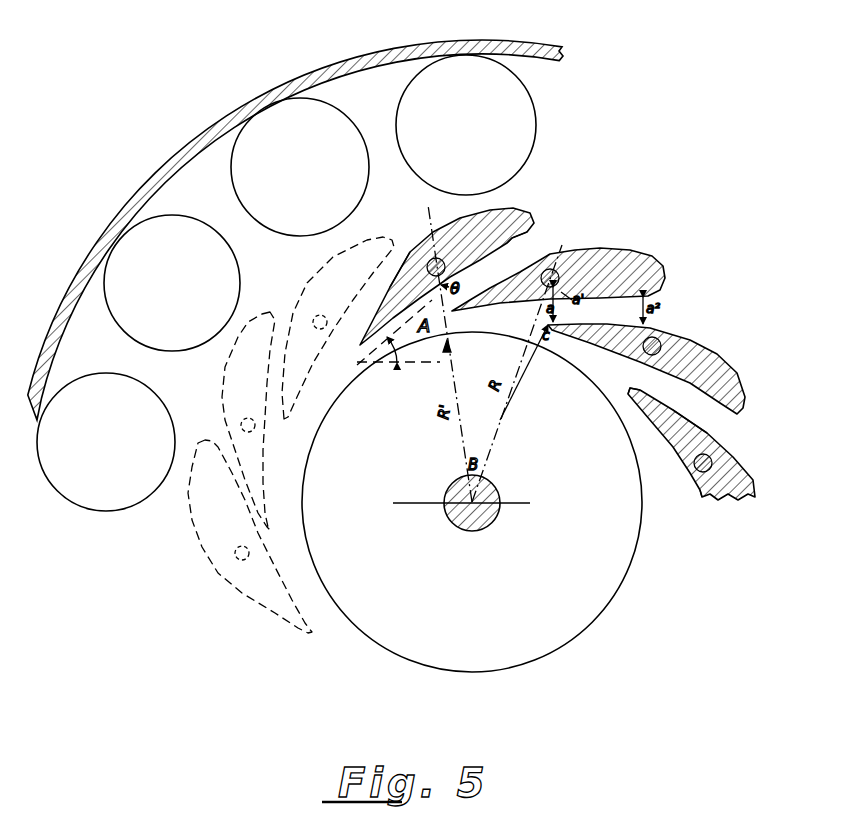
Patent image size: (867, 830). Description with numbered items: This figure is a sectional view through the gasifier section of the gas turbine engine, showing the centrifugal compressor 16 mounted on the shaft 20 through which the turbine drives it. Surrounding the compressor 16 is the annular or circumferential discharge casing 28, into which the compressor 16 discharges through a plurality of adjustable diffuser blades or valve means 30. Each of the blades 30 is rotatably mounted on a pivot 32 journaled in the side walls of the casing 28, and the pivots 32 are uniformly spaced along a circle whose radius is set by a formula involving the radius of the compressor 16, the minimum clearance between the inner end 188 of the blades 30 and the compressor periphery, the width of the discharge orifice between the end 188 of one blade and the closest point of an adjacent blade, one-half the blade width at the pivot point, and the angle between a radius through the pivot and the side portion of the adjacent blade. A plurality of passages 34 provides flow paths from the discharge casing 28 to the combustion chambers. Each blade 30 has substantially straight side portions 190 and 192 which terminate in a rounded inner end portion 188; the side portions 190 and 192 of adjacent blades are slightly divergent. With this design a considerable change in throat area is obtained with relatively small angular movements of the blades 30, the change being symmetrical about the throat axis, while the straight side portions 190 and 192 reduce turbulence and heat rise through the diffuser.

The compressor 16 is at (472, 612).
The shaft 20 is at (488, 519).
The discharge casing 28 is at (425, 45).
The diffuser blades 30 is at (511, 221).
The pivots 32 is at (436, 257).
The passages 34 is at (478, 140).
The inner end 188 is at (628, 389).
The side portion 190 is at (393, 283).
The side portion 192 is at (514, 237).